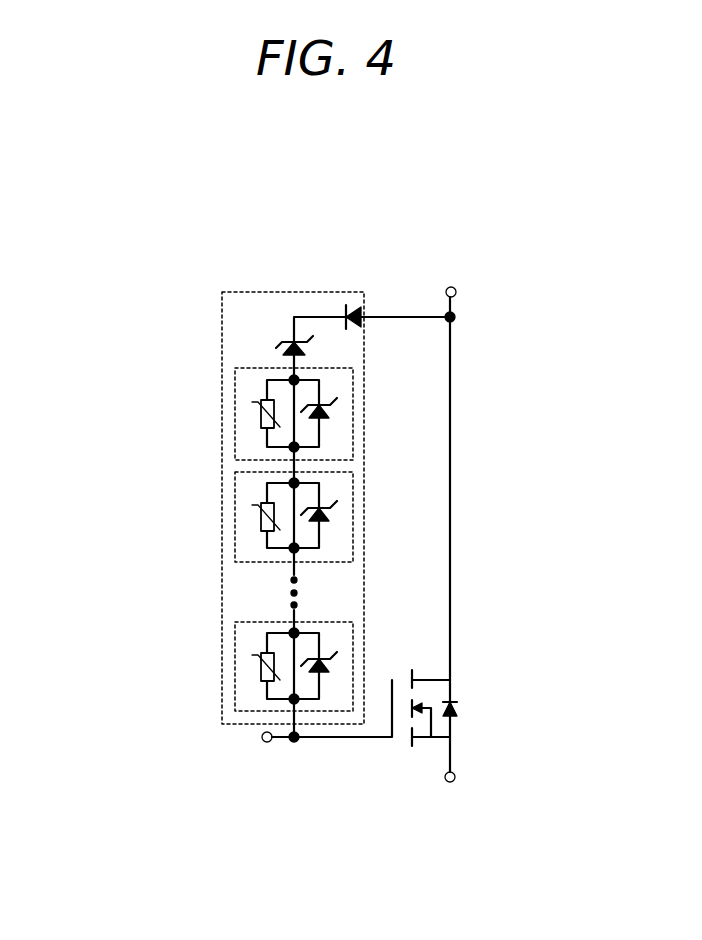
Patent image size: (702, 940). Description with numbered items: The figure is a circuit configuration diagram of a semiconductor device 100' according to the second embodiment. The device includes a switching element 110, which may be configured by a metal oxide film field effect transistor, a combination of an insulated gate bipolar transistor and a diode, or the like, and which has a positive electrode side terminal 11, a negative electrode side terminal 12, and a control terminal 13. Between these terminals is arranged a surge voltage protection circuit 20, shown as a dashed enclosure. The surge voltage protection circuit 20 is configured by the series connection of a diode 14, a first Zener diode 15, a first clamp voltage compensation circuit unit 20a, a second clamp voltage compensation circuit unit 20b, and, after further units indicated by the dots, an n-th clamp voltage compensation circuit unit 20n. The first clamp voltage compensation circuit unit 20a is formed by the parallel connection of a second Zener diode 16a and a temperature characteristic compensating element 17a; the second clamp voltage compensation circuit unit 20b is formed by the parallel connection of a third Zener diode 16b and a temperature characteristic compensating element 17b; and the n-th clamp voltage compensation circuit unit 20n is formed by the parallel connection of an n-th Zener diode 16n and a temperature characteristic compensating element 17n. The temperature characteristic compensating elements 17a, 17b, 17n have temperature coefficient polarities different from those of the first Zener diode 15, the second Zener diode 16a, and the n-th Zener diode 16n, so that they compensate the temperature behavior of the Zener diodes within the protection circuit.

The semiconductor device 100' is at (303, 497).
The positive electrode side terminal 11 is at (474, 262).
The negative electrode side terminal 12 is at (474, 806).
The control terminal 13 is at (257, 768).
The diode 14 is at (311, 249).
The first Zener diode 15 is at (248, 292).
The second Zener diode 16a is at (203, 358).
The third Zener diode 16b is at (196, 478).
The n-th Zener diode 16n is at (201, 611).
The temperature characteristic compensating element 17a is at (180, 403).
The temperature characteristic compensating element 17b is at (175, 511).
The temperature characteristic compensating element 17n is at (179, 654).
The surge voltage protection circuit 20 is at (247, 439).
The first clamp voltage compensation circuit unit 20a is at (253, 379).
The second clamp voltage compensation circuit unit 20b is at (247, 499).
The n-th clamp voltage compensation circuit unit 20n is at (252, 631).
The switching element 110 is at (427, 694).